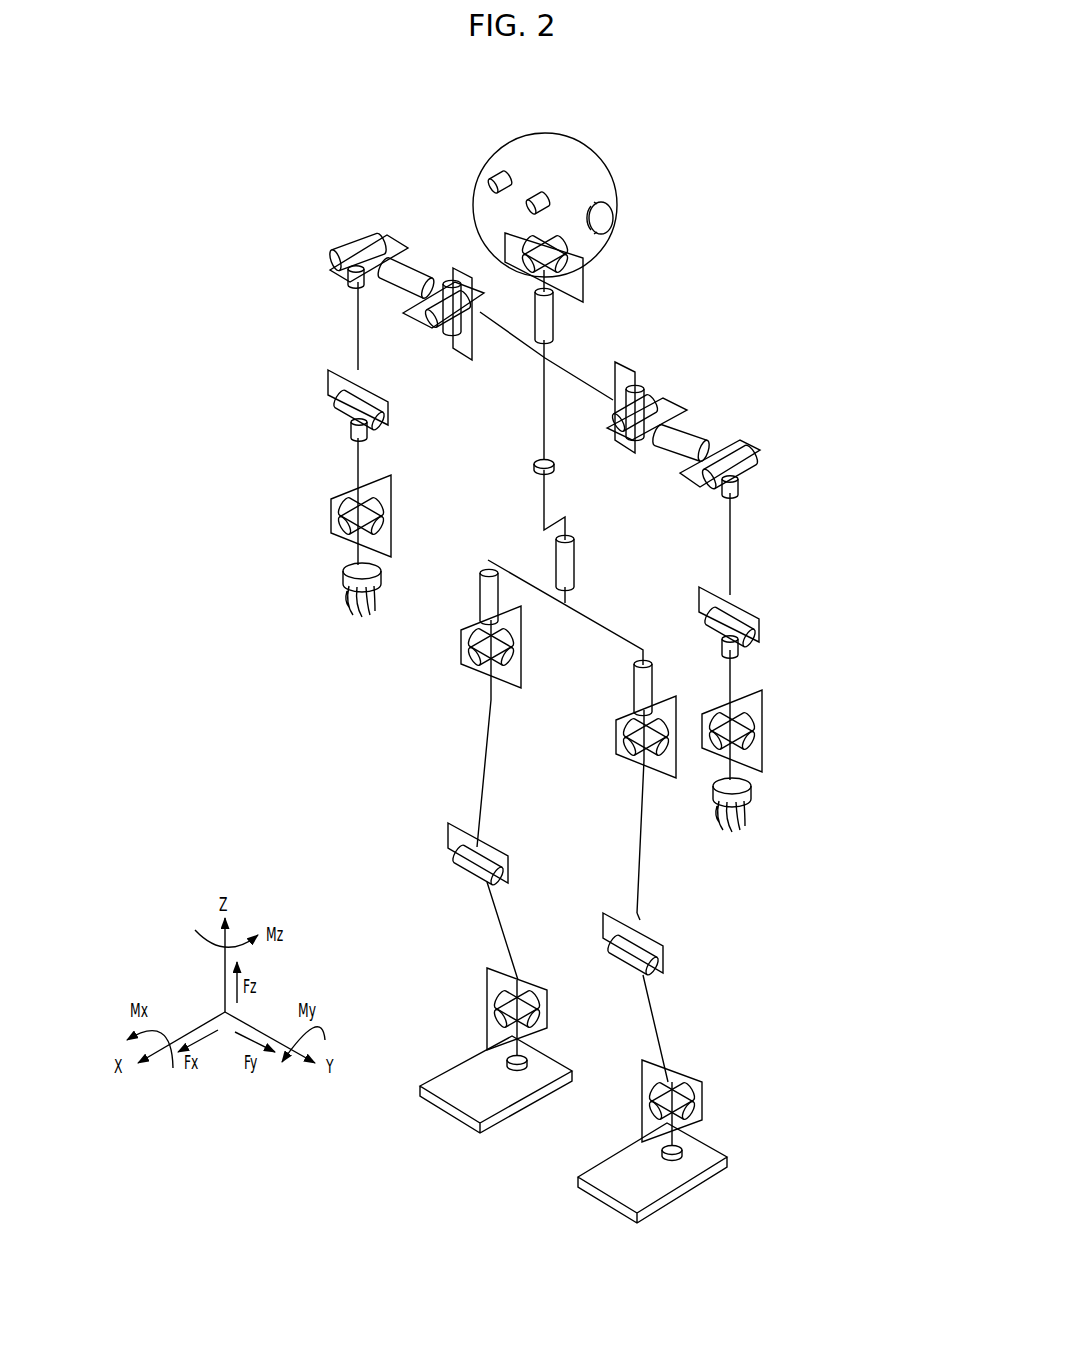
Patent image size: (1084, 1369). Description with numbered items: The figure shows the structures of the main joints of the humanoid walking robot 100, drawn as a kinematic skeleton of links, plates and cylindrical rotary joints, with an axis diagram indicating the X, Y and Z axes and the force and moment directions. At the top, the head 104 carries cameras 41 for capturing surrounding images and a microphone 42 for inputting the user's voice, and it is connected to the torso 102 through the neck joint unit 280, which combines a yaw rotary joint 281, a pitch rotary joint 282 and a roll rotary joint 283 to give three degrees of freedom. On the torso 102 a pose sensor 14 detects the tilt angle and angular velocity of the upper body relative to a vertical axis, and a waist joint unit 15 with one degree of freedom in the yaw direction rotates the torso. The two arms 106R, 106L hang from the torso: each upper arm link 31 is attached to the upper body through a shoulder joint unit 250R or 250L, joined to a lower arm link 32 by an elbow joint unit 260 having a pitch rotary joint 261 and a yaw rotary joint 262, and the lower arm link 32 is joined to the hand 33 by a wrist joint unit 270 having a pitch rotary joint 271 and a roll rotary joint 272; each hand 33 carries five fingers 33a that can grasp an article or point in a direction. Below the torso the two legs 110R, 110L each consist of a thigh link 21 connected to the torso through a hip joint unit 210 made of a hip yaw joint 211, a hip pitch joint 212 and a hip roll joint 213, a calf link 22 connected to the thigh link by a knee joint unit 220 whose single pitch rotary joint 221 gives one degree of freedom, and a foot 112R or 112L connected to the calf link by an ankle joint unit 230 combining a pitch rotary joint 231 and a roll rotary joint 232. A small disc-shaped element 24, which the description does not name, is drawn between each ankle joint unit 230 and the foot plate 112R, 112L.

The robot 100 is at (820, 144).
The torso 102 is at (561, 488).
The head 104 is at (551, 180).
The right arm 106R is at (508, 488).
The left arm 106L is at (760, 459).
The right leg 110R is at (547, 901).
The left leg 110L is at (700, 890).
The right foot 112R is at (452, 1108).
The left foot 112L is at (600, 1195).
The pose sensor 14 is at (552, 469).
The waist joint unit 15 is at (577, 560).
The thigh link 21 is at (483, 765).
The calf link 22 is at (500, 930).
The force/torque sensor 24 is at (525, 1068).
The upper arm link 31 is at (358, 320).
The lower arm link 32 is at (358, 453).
The hand 33 is at (552, 697).
The fingers 33a is at (356, 605).
The cameras 41 is at (534, 206).
The microphones 42 is at (612, 214).
The hip joint unit 210 is at (521, 704).
The hip yaw joint 211 is at (485, 590).
The hip pitch joint 212 is at (508, 655).
The hip roll joint 213 is at (472, 672).
The knee joint unit 220 is at (562, 887).
The rotary joint in the pitch direction 221 is at (480, 858).
The ankle joint unit 230 is at (592, 1041).
The rotary joint in the pitch direction 231 is at (540, 1020).
The rotary joint in the roll direction 232 is at (520, 1000).
The right shoulder joint unit 250R is at (358, 230).
The left shoulder joint unit 250L is at (700, 392).
The elbow joint unit 260 is at (524, 496).
The rotary joint in the pitch direction 261 is at (372, 392).
The rotary joint in the yaw direction 262 is at (365, 428).
The wrist joint unit 270 is at (546, 622).
The rotary joint in the pitch direction 271 is at (385, 525).
The rotary joint in the roll direction 272 is at (380, 508).
The neck joint unit 280 is at (562, 288).
The rotary joint in the yaw direction 281 is at (553, 320).
The rotary joint in the pitch direction 282 is at (578, 254).
The rotary joint in the roll direction 283 is at (520, 262).